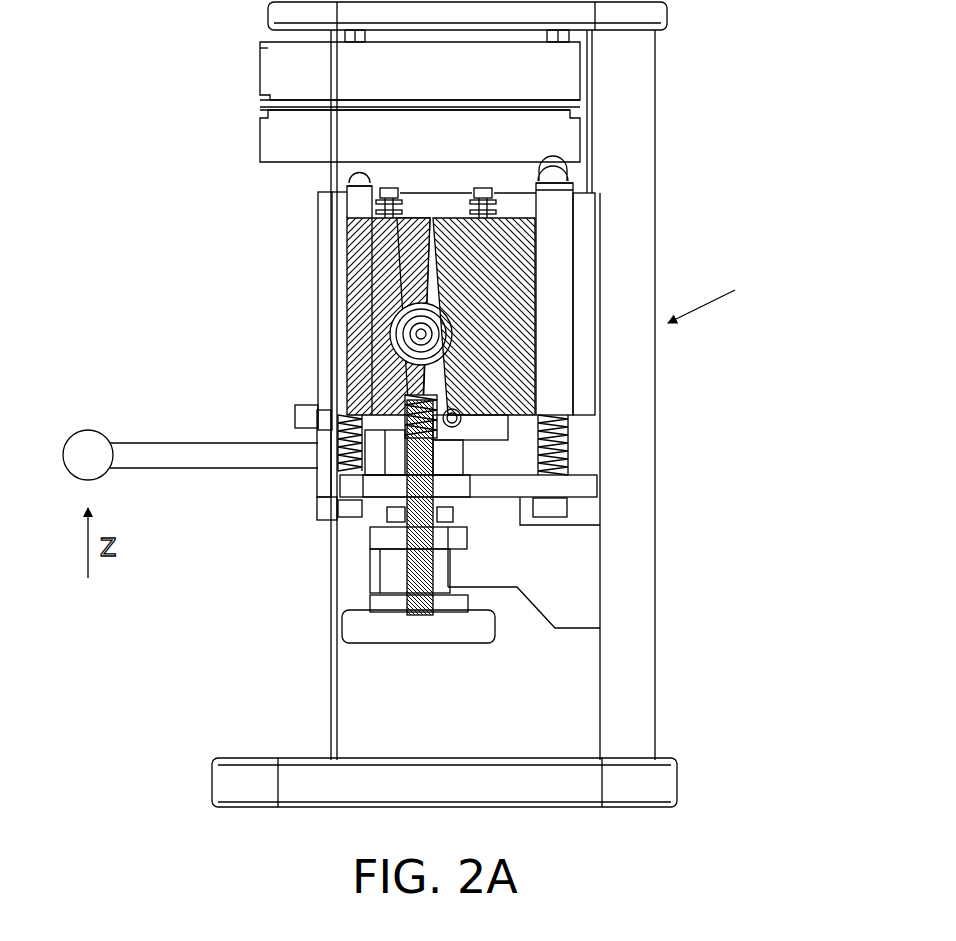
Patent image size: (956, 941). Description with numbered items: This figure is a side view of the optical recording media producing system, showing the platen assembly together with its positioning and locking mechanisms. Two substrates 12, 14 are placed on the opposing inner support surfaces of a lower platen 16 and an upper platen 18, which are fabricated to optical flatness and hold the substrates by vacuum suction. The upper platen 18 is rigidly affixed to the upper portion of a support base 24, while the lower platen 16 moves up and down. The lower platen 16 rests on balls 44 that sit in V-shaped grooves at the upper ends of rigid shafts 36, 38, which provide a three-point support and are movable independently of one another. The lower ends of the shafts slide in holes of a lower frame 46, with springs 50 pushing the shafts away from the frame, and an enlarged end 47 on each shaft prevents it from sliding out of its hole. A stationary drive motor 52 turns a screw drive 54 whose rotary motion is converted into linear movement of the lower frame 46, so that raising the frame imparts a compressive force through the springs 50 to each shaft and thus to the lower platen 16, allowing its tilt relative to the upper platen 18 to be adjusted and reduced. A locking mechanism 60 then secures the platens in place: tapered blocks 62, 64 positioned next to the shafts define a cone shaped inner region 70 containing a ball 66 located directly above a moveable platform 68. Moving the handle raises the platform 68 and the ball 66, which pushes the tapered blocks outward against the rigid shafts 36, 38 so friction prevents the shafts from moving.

The substrate 12 is at (572, 116).
The substrate 14 is at (572, 100).
The lower platen 16 is at (270, 143).
The upper platen 18 is at (275, 72).
The support base 24 is at (630, 660).
The rigid shaft 36 is at (560, 380).
The rigid shaft 38 is at (345, 206).
The ball 44 is at (358, 175).
The lower frame 46 is at (585, 488).
The enlarged end 47 is at (348, 512).
The spring 50 is at (340, 455).
The drive motor 52 is at (400, 636).
The screw drive 54 is at (410, 580).
The locking mechanism 60 is at (719, 298).
The tapered block 62 is at (347, 244).
The tapered block 64 is at (520, 295).
The ball 66 is at (392, 325).
The moveable platform 68 is at (392, 376).
The cone shaped inner region 70 is at (435, 270).